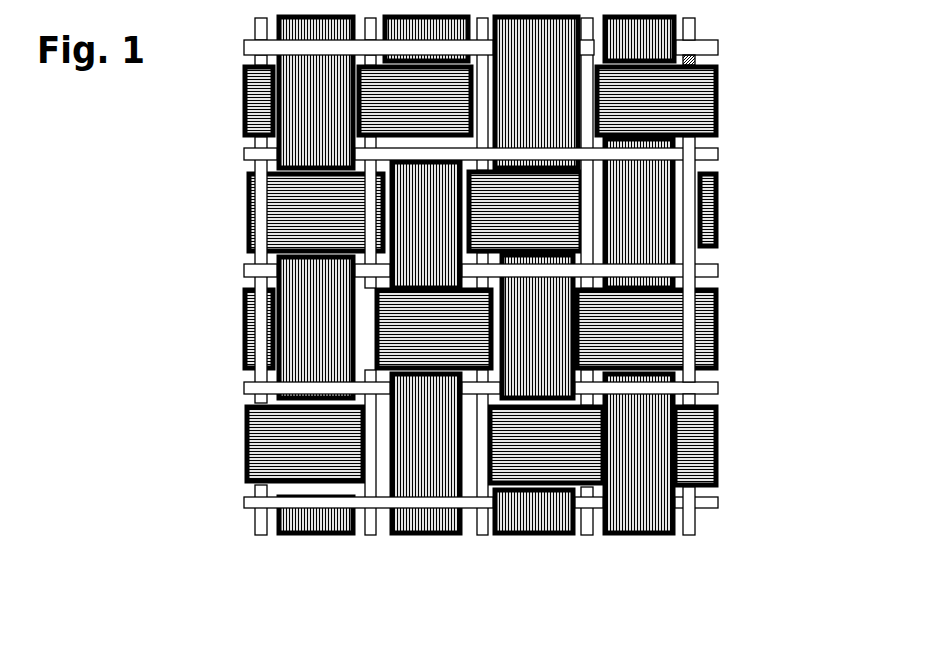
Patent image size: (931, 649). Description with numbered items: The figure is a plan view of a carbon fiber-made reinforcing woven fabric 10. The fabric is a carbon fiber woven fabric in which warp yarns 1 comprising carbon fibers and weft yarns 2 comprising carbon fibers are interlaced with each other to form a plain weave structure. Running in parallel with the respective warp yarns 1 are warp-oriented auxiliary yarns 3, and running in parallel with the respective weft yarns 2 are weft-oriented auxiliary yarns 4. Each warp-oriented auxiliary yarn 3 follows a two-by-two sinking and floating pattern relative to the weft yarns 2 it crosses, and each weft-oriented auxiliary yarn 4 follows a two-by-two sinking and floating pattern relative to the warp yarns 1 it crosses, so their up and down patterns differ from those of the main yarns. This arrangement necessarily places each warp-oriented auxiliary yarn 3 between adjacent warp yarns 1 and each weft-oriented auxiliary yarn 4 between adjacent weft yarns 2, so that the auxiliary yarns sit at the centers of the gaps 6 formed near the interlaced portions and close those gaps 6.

The warp yarn 1 is at (638, 202).
The weft yarn 2 is at (638, 325).
The warp-oriented auxiliary yarn 3 is at (693, 258).
The weft-oriented auxiliary yarn 4 is at (623, 388).
The gap 6 is at (623, 390).
The carbon fiber-made reinforcing woven fabric 10 is at (532, 322).